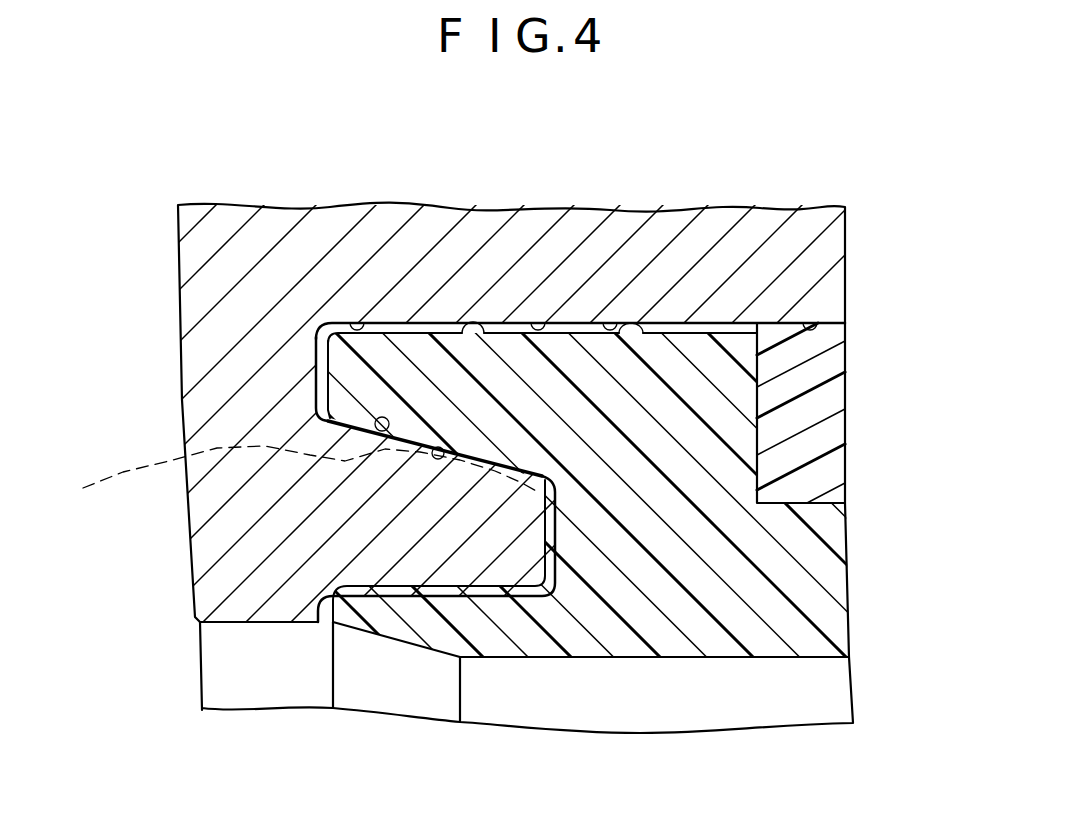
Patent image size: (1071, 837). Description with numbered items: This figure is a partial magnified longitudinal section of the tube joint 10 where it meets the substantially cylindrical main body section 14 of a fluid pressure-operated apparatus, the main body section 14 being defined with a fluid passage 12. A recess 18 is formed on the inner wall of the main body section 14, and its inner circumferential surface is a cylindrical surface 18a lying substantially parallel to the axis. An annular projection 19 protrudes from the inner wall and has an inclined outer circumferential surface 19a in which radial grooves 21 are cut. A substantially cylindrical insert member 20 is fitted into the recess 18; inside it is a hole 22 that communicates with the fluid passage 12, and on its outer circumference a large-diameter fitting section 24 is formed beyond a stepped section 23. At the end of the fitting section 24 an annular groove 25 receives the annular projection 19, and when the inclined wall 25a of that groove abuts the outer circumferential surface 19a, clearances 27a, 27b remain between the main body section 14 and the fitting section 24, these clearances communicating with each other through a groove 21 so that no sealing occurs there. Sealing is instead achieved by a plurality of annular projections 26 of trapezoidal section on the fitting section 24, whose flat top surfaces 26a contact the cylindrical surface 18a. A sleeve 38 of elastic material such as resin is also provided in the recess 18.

The tube joint 10 is at (778, 96).
The fluid passage 12 is at (230, 655).
The main body section 14 is at (175, 216).
The recess 18 is at (850, 357).
The cylindrical surface 18a is at (542, 325).
The annular projection 19 is at (500, 530).
The inclined outer circumferential surface 19a is at (374, 429).
The insert member 20 is at (712, 318).
The groove 21 is at (295, 476).
The hole 22 is at (835, 690).
The stepped section 23 is at (760, 410).
The fitting section 24 is at (670, 367).
The annular groove 25 is at (558, 570).
The inclined wall 25a is at (440, 447).
The annular projection 26 is at (337, 323).
The top surface 26a is at (357, 328).
The clearance 27a is at (413, 597).
The clearance 27b is at (317, 362).
The sleeve 38 is at (858, 353).